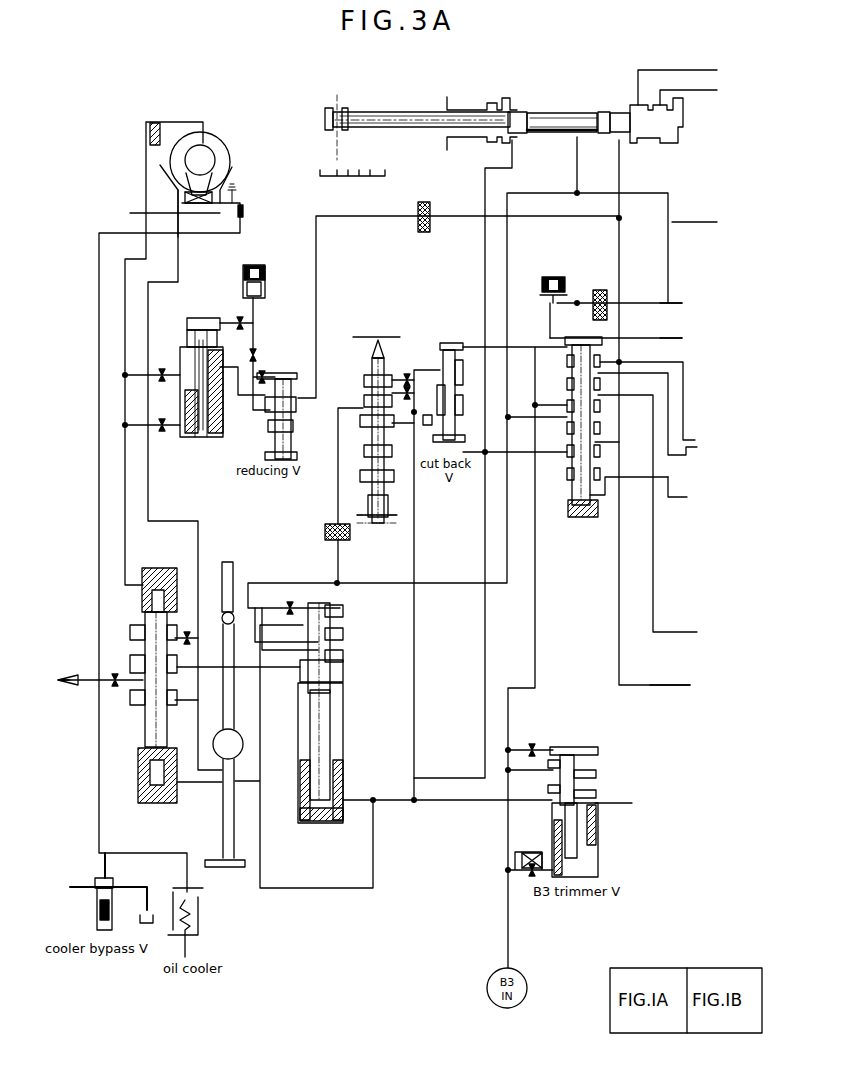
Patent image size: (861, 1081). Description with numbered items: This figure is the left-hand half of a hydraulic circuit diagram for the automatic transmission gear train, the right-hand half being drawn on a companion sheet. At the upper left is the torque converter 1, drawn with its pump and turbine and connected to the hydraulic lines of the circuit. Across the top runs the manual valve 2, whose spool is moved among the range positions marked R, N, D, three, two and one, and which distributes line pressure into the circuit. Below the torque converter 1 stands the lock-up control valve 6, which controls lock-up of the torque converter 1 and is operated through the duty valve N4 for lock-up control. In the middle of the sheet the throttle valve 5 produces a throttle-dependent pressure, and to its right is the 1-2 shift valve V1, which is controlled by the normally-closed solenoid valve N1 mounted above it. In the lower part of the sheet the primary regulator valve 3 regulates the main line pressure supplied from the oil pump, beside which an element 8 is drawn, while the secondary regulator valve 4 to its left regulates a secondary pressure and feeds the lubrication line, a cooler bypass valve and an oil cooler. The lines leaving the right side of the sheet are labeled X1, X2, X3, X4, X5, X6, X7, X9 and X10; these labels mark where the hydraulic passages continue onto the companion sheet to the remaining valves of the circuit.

The torque converter 1 is at (231, 160).
The manual valve 2 is at (555, 110).
The primary regulator valve 3 is at (343, 684).
The secondary regulator valve 4 is at (143, 732).
The throttle valve 5 is at (378, 340).
The lock-up control valve 6 is at (200, 320).
The oil pump 8 is at (223, 714).
The normally-closed solenoid valve N1 is at (553, 277).
The duty valve N4 is at (262, 265).
The 1-2 shift valve V1 is at (567, 350).
The hydraulic port X1 is at (675, 222).
The hydraulic port X2 is at (676, 308).
The hydraulic port X3 is at (676, 343).
The hydraulic port X4 is at (691, 440).
The hydraulic port X5 is at (695, 458).
The hydraulic port X6 is at (690, 500).
The hydraulic port X7 is at (677, 632).
The hydraulic port X9 is at (668, 685).
The hydraulic port X10 is at (613, 803).